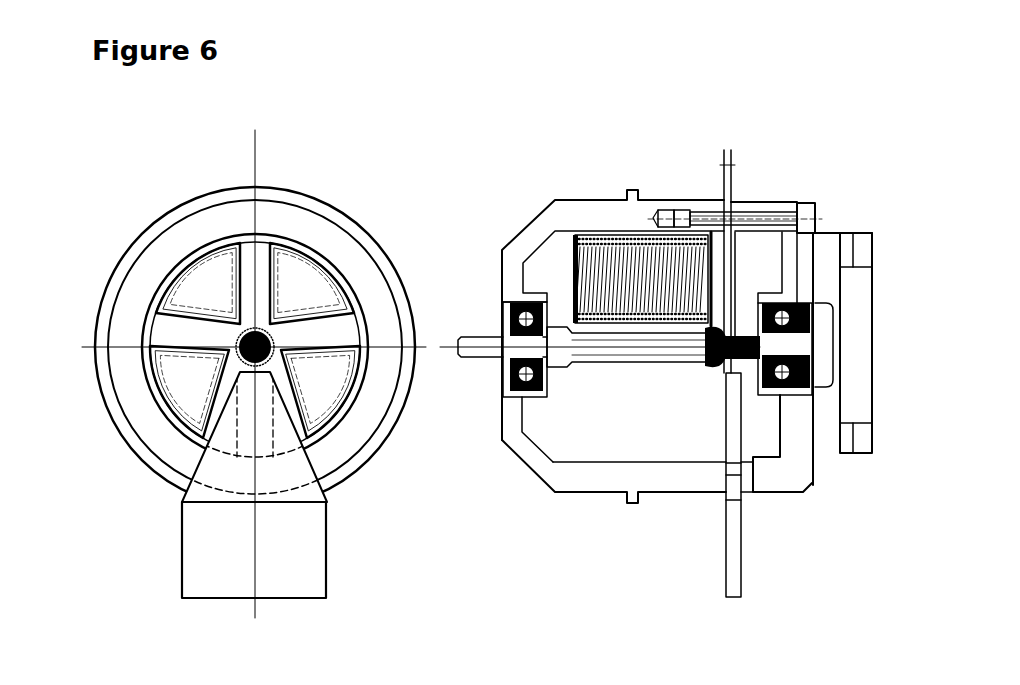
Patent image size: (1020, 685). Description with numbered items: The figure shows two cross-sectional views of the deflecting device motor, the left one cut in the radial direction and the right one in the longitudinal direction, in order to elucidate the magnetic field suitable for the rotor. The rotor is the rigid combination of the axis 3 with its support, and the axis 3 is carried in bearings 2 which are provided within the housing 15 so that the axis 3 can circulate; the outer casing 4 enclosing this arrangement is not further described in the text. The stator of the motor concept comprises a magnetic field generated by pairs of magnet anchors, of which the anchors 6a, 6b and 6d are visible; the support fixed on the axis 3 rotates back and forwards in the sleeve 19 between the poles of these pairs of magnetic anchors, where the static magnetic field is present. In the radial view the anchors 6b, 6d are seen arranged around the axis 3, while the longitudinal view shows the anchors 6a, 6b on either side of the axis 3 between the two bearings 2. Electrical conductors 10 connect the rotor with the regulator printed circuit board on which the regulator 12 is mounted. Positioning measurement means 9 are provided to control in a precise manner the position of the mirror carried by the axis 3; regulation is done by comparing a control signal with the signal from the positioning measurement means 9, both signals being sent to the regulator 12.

The bearings 2 is at (506, 354).
The axis 3 is at (471, 341).
The housing 4 is at (562, 217).
The magnet anchor 6a is at (762, 260).
The magnet anchor 6b is at (302, 283).
The magnet anchor 6d is at (192, 295).
The positioning measurement means 9 is at (285, 468).
The electrical conductors 10 is at (778, 390).
The regulator 12 is at (295, 528).
The housing 15 is at (593, 478).
The sleeve 19 is at (735, 373).